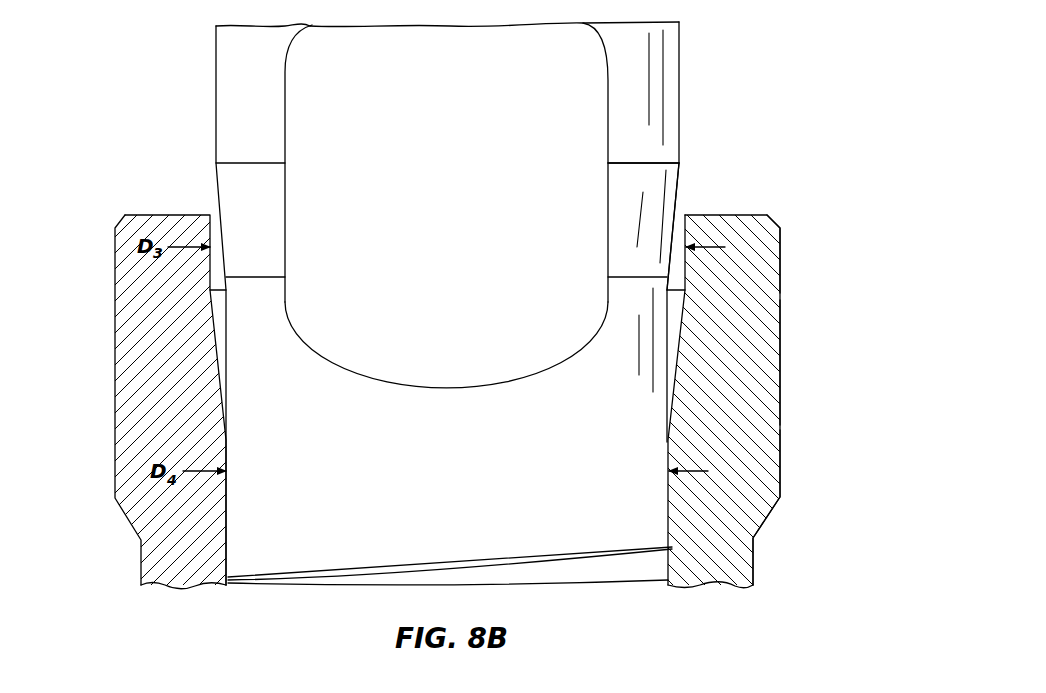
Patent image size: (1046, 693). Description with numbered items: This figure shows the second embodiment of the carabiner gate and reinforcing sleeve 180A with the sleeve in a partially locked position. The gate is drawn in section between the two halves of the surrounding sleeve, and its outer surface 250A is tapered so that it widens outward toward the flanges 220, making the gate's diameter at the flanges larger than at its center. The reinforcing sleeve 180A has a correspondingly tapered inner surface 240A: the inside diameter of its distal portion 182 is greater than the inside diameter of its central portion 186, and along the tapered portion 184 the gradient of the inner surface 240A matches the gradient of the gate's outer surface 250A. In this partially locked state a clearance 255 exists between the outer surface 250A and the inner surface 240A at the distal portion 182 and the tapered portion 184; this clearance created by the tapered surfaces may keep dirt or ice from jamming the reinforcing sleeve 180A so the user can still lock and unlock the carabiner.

The flanges 220 is at (658, 85).
The outer surface 250A is at (680, 172).
The clearance 255 is at (677, 223).
The reinforcing sleeve 180A is at (152, 360).
The inner surface 240A is at (682, 328).
The distal portion 182 is at (788, 215).
The tapered portion 184 is at (788, 303).
The central portion 186 is at (788, 428).